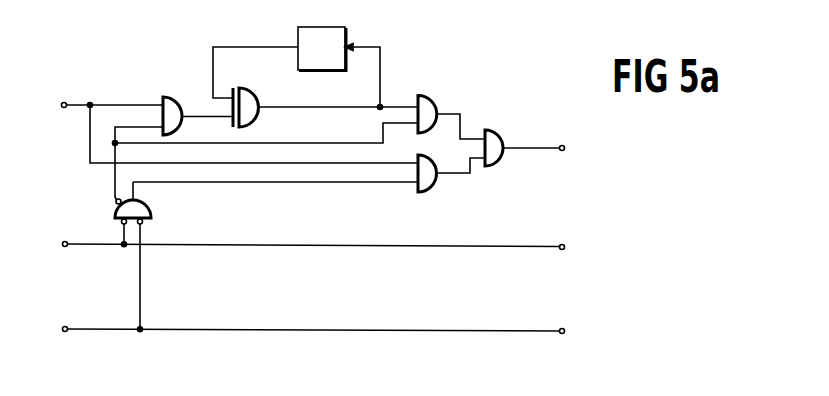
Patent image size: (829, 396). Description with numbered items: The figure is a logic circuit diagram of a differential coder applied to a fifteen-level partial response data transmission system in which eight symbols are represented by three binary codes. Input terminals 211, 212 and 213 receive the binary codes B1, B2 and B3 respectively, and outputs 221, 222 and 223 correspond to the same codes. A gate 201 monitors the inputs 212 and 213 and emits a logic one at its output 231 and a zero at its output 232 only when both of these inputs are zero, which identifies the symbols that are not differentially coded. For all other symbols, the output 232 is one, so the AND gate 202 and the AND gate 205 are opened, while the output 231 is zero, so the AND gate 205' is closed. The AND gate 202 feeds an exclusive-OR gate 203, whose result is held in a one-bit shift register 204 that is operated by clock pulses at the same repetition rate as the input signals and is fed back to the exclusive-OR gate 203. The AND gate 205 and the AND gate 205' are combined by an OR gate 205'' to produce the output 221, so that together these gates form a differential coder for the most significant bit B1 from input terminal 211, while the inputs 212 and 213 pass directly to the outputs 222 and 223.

The gate 201 is at (153, 210).
The AND gate 202 is at (165, 96).
The exclusive-OR gate 203 is at (250, 88).
The one-bit shift register 204 is at (348, 30).
The AND gate 205 is at (451, 103).
The AND gate 205' is at (451, 187).
The OR gate 205'' is at (517, 138).
The input terminal 211 is at (227, 129).
The input terminal 212 is at (298, 256).
The input terminal 213 is at (298, 342).
The output 221 is at (546, 148).
The output 222 is at (576, 247).
The output 223 is at (576, 332).
The output 231 is at (280, 183).
The output 232 is at (115, 176).